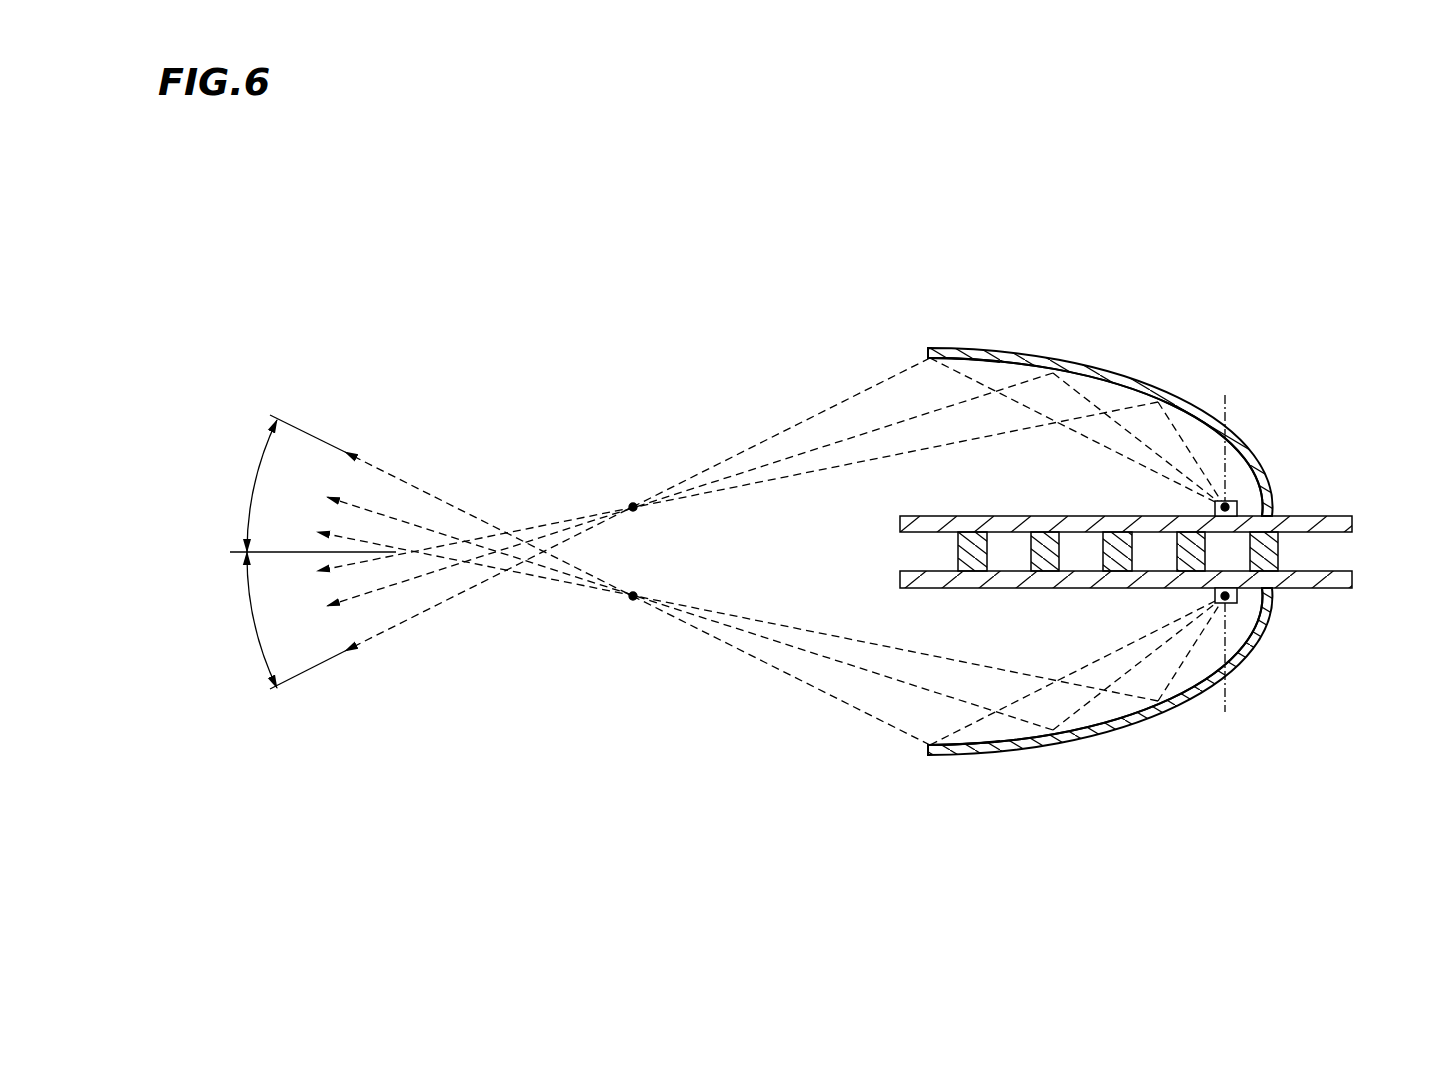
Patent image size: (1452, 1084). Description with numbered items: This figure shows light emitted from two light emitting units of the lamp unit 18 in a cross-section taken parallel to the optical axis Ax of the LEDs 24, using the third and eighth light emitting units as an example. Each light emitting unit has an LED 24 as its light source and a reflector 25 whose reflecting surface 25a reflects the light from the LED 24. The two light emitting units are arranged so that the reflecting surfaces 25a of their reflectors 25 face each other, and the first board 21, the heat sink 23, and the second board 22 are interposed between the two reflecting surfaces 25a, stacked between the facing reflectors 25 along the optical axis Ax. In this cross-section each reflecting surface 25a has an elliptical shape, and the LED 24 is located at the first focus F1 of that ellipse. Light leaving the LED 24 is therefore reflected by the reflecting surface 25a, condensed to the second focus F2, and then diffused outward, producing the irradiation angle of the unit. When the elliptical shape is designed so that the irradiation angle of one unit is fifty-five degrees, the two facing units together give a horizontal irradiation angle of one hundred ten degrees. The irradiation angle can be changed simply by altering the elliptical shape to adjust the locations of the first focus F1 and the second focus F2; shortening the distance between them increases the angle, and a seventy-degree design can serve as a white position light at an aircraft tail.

The lamp unit 18 is at (866, 314).
The first board 21 is at (1326, 589).
The second board 22 is at (1331, 515).
The heat sink 23 is at (1300, 553).
The LED 24 is at (1238, 508).
The reflector 25 is at (1098, 369).
The reflecting surface 25a is at (1004, 364).
The first focus F1 is at (1233, 500).
The second focus F2 is at (633, 503).
The optical axis Ax is at (1227, 556).